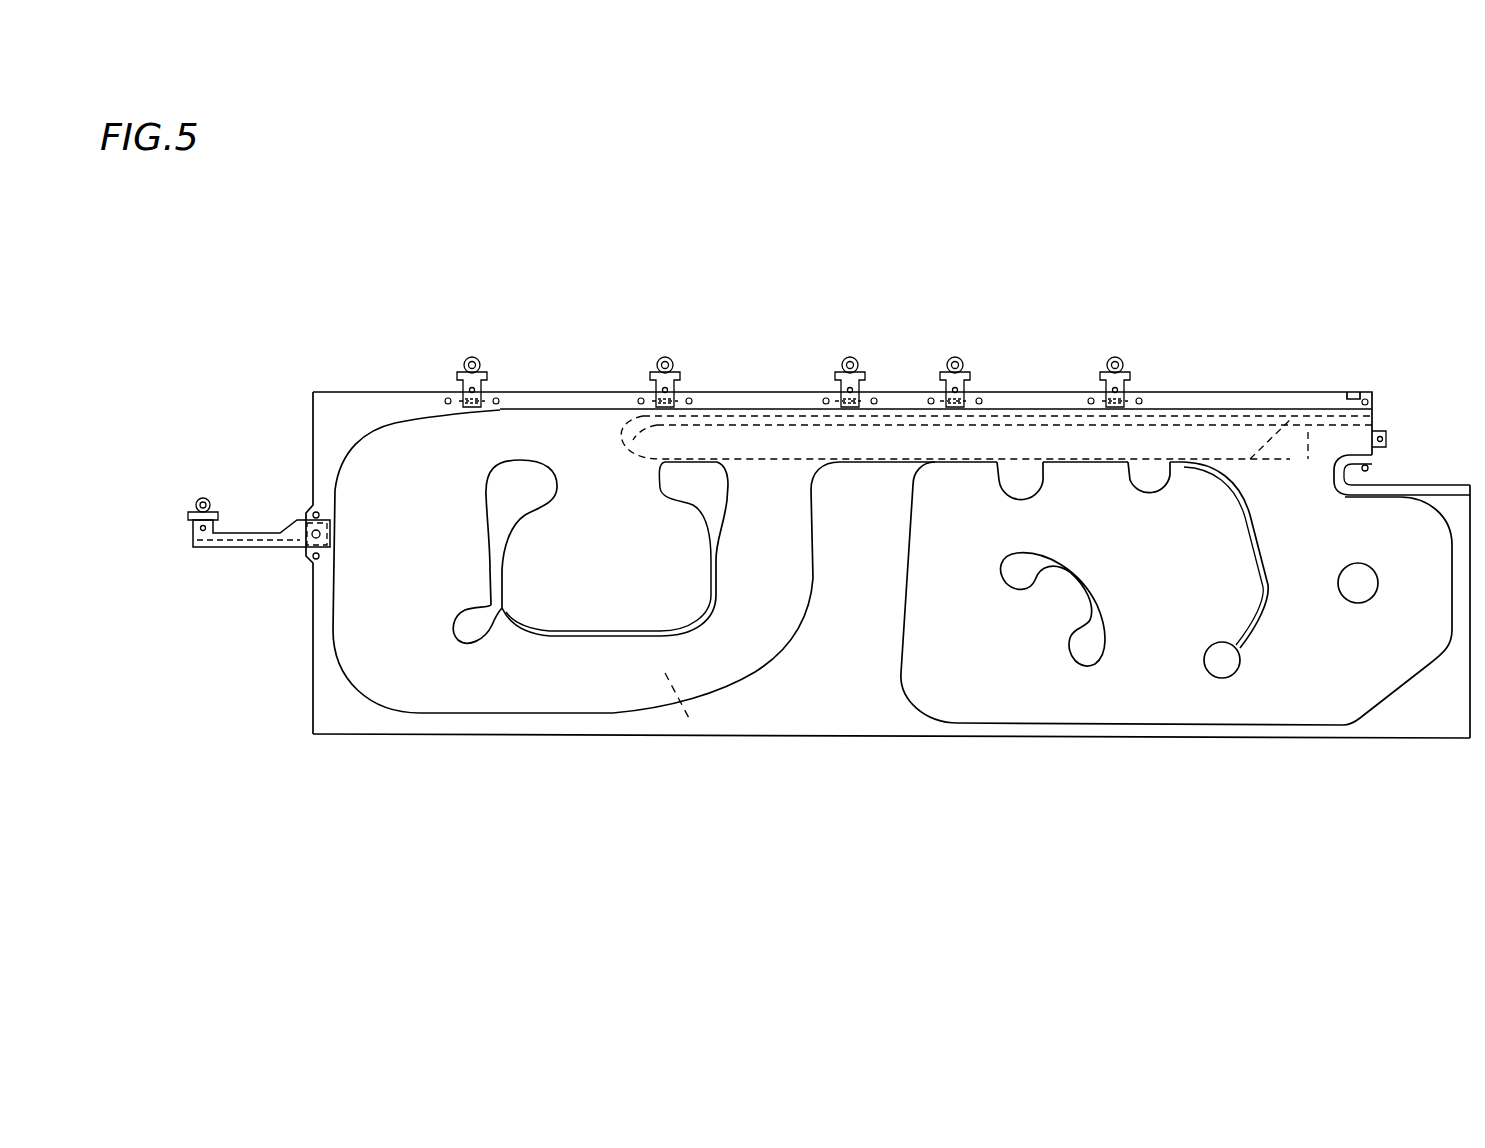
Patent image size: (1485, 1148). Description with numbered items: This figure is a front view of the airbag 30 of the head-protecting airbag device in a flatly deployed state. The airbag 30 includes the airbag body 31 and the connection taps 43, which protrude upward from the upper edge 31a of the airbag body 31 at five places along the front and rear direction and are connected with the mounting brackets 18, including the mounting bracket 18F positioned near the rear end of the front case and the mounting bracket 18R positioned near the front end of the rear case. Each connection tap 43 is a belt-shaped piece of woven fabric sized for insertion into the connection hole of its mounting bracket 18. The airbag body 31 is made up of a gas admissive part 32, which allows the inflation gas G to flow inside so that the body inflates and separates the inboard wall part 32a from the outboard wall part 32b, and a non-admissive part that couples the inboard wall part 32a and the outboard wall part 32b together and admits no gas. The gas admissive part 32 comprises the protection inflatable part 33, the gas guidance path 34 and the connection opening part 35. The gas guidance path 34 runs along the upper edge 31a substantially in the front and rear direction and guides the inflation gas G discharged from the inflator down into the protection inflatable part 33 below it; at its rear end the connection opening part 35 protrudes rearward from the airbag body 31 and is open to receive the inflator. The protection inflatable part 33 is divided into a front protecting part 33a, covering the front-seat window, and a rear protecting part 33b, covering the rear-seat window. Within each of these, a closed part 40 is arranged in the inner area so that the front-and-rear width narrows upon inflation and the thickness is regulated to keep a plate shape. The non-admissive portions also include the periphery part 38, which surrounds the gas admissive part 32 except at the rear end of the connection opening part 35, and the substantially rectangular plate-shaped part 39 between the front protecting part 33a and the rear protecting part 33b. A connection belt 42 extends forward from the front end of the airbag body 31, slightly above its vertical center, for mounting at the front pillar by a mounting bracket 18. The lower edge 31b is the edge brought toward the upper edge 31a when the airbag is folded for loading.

The mounting bracket 18 is at (670, 350).
The mounting bracket 18F is at (857, 352).
The mounting bracket 18R is at (962, 352).
The airbag 30 is at (1420, 220).
The airbag body 31 is at (1357, 376).
The upper edge 31a is at (558, 397).
The lower edge 31b is at (528, 735).
The gas admissive part 32 is at (864, 583).
The inboard wall part 32a is at (620, 678).
The outboard wall part 32b is at (665, 673).
The protection inflatable part 33 is at (864, 584).
The front protecting part 33a is at (430, 710).
The rear protecting part 33b is at (1106, 738).
The gas guidance path 34 is at (775, 435).
The connection opening part 35 is at (1365, 435).
The periphery part 38 is at (346, 405).
The plate-shaped part 39 is at (849, 640).
The closed part 40 is at (1390, 738).
The connection belt 42 is at (263, 548).
The connection tap 43 is at (683, 384).
The inflation gas G is at (497, 438).